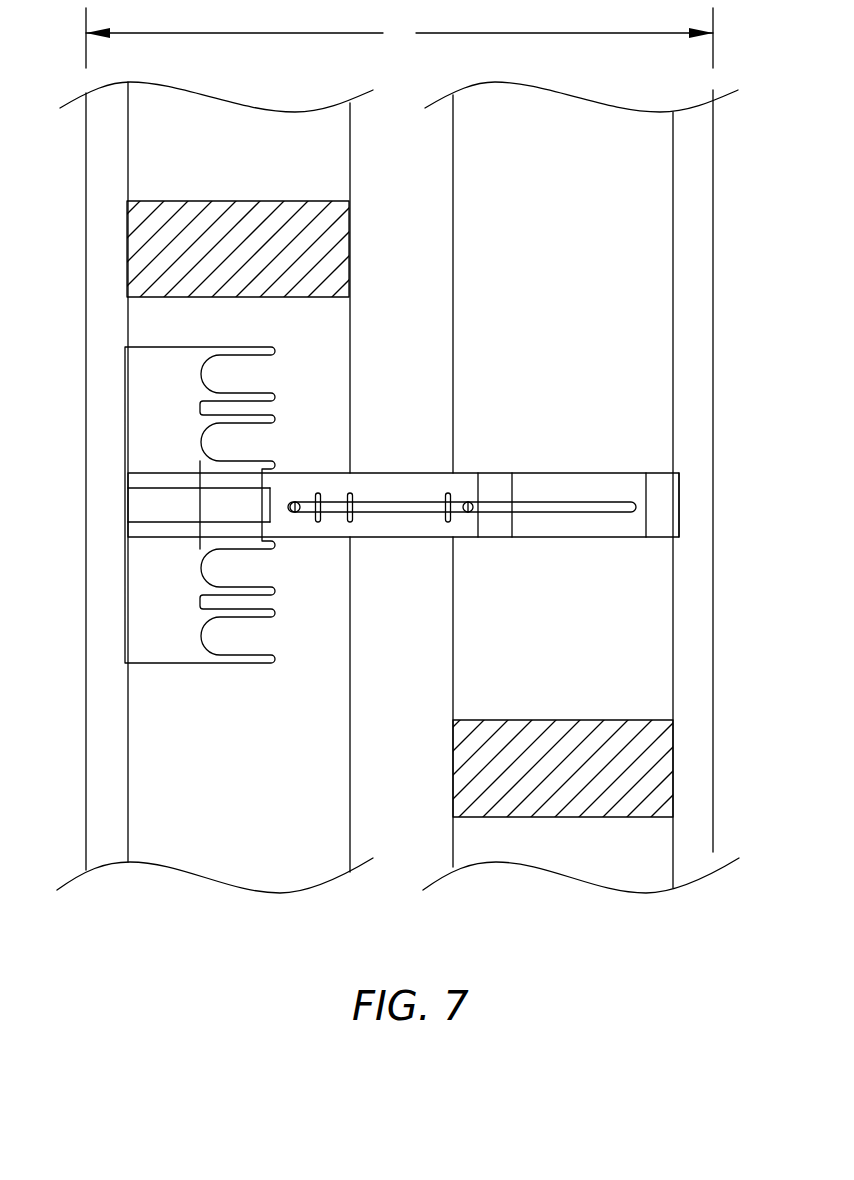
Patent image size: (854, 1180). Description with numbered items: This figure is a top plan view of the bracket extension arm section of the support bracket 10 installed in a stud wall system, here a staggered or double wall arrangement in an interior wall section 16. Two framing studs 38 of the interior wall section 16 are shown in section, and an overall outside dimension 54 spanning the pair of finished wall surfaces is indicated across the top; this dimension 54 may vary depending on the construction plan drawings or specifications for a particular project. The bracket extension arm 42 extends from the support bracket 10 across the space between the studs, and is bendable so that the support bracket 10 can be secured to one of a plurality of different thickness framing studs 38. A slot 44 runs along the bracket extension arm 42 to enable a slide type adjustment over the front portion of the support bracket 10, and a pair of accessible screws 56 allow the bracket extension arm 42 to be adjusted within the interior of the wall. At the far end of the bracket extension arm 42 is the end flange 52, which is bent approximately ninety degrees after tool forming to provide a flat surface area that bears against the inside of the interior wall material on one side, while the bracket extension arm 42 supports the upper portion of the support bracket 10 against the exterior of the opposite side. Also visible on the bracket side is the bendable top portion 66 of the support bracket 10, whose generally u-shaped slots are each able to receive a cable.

The overall outside dimension 54 is at (410, 45).
The support bracket 10 is at (123, 580).
The framing stud 38 is at (700, 613).
The interior wall section 16 is at (697, 862).
The top portion 66 is at (162, 640).
The bracket extension arm 42 is at (411, 487).
The slot 44 is at (578, 509).
The end flange 52 is at (658, 485).
The accessible screws 56 is at (293, 514).